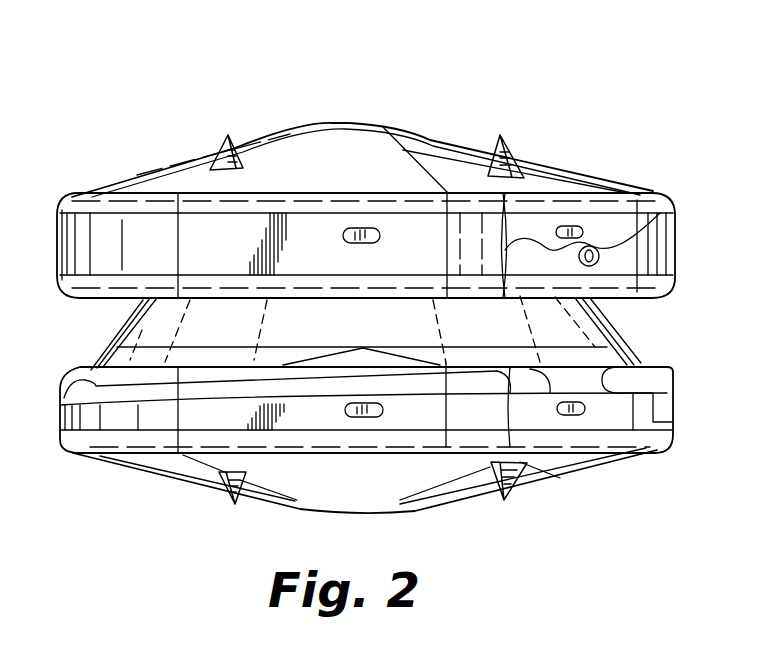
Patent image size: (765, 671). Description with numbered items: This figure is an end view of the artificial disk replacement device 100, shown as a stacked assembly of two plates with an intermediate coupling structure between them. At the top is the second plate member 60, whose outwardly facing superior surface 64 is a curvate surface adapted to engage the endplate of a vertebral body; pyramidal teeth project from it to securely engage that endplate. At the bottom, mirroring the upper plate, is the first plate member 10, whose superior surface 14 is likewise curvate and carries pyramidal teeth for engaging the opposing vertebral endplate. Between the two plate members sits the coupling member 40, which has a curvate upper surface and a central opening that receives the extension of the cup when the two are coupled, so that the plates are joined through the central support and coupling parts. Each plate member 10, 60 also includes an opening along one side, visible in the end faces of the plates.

The artificial disk replacement device 100 is at (150, 110).
The superior surface 64 is at (404, 140).
The second plate member 60 is at (592, 163).
The coupling member 40 is at (620, 325).
The superior surface 14 is at (168, 465).
The first plate member 10 is at (565, 481).